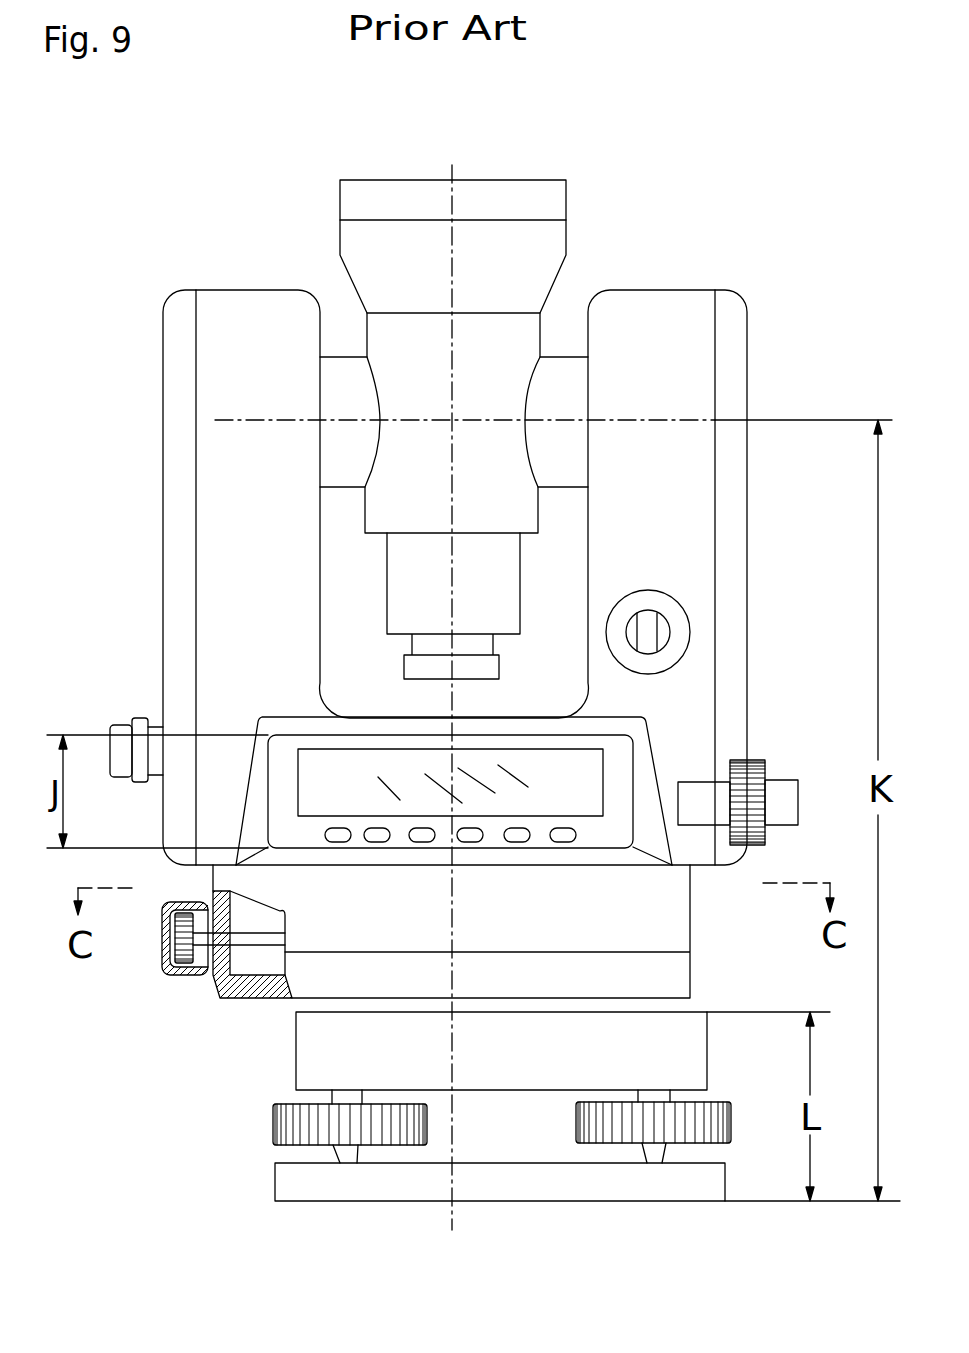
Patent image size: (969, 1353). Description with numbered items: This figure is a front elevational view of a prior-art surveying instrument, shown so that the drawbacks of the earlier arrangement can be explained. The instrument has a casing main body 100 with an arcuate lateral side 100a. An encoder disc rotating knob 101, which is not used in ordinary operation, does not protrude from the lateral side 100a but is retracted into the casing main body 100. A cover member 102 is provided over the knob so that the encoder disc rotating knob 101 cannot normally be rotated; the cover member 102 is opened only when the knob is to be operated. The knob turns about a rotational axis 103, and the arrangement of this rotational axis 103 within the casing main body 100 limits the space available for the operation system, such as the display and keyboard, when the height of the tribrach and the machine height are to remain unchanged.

The casing main body 100 is at (210, 600).
The arcuate lateral side 100a is at (163, 536).
The encoder disc rotating knob 101 is at (182, 972).
The cover member 102 is at (160, 963).
The rotational axis 103 is at (265, 953).